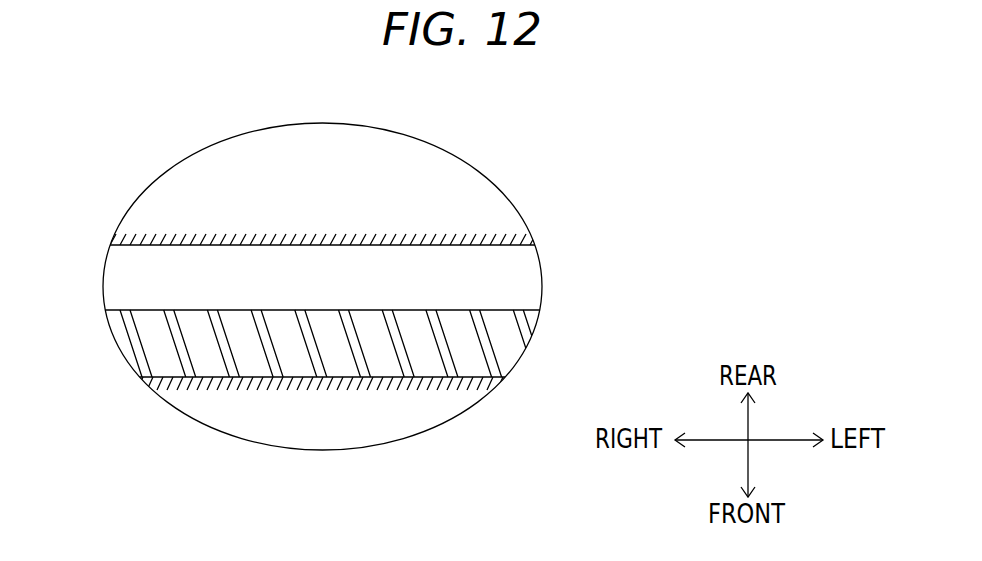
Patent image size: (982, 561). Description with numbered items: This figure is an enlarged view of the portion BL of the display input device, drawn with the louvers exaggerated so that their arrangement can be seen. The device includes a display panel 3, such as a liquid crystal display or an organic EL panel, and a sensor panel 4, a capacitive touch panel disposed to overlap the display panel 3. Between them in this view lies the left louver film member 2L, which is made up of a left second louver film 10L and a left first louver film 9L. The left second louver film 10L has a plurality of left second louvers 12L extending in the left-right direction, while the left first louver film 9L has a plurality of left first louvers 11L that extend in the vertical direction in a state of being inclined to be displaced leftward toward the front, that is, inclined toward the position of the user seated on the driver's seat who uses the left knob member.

The portion BL is at (336, 100).
The display panel 3 is at (448, 203).
The sensor panel 4 is at (412, 412).
The left louver film member 2L is at (395, 359).
The left second louver film 10L is at (542, 272).
The left first louver film 9L is at (382, 391).
The left first louvers 11L is at (275, 360).
The left second louvers 12L is at (130, 280).